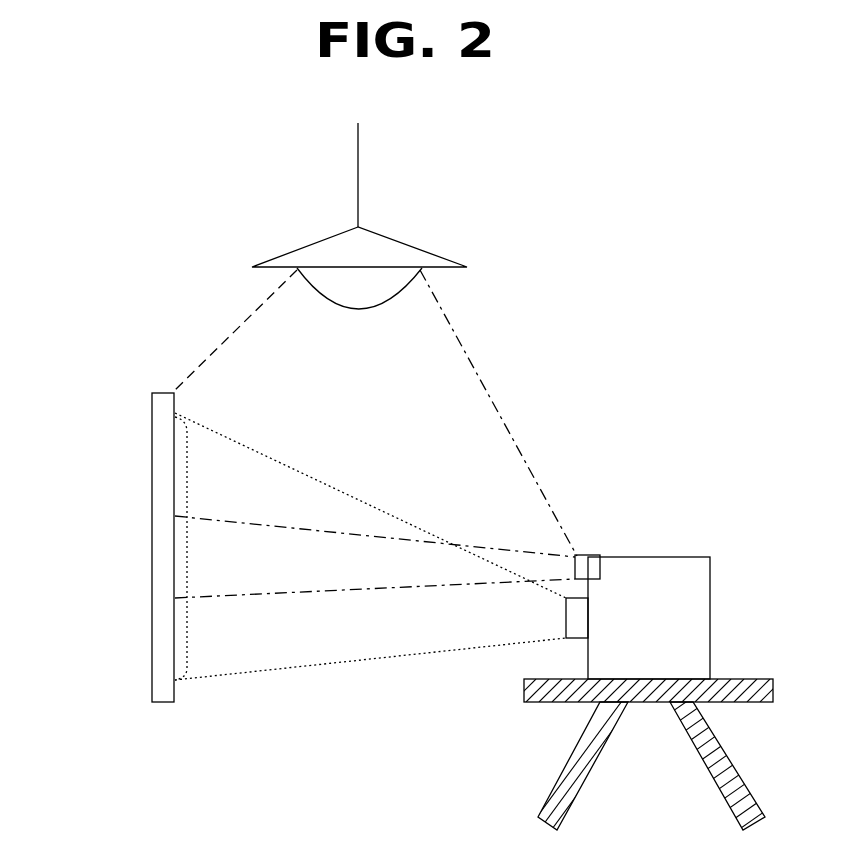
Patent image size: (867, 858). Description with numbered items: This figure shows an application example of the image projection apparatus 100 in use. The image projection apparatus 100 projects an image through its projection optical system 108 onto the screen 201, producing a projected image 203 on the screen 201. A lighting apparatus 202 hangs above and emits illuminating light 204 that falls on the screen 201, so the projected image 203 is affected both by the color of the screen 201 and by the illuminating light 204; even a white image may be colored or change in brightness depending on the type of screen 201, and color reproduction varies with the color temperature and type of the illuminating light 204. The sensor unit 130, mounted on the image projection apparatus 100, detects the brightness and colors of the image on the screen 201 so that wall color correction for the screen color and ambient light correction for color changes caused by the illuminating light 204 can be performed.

The image projection apparatus 100 is at (673, 631).
The projection optical system 108 is at (575, 617).
The sensor unit 130 is at (588, 556).
The screen 201 is at (165, 637).
The lighting apparatus 202 is at (383, 250).
The projected image 203 is at (188, 547).
The illuminating light 204 is at (448, 325).